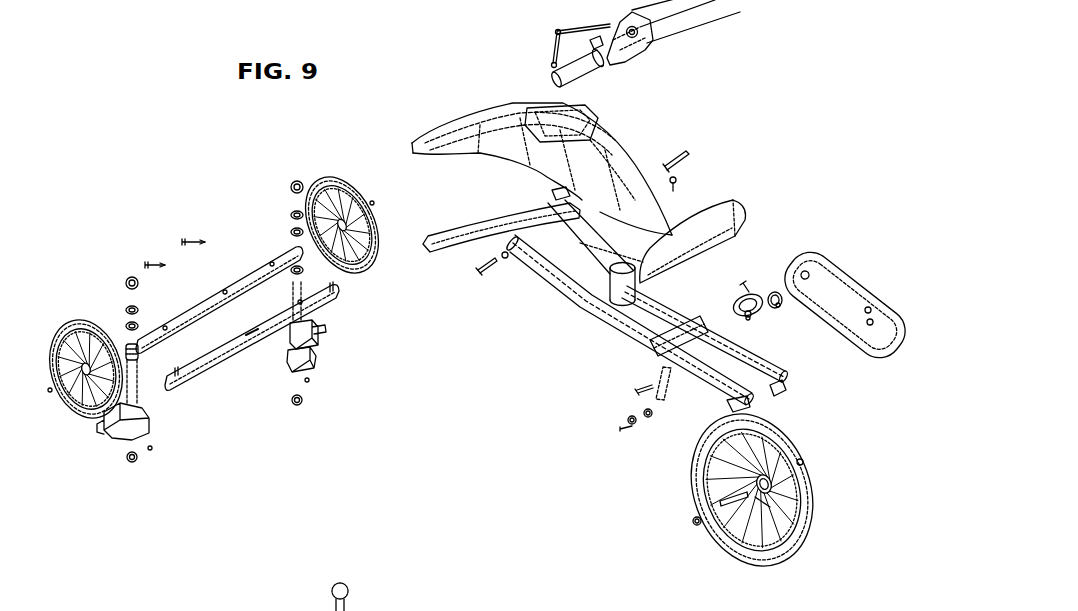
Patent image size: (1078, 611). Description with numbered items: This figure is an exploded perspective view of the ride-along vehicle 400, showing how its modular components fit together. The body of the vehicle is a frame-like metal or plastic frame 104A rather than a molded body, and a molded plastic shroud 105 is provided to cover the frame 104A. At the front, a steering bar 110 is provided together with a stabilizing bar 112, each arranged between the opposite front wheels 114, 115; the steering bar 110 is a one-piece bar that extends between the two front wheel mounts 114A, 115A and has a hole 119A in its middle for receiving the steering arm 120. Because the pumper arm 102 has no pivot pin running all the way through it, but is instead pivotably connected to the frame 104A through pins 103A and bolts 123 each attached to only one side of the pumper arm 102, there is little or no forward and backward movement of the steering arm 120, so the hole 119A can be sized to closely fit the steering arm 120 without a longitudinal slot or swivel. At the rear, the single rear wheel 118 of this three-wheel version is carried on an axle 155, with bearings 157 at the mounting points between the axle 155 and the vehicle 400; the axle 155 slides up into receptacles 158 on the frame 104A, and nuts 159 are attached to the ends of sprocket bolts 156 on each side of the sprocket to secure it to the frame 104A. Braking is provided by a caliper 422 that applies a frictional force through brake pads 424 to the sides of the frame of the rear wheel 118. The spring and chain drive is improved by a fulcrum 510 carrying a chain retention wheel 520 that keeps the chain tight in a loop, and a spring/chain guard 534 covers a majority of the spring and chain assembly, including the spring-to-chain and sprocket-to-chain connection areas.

The ride-along vehicle 400 is at (118, 115).
The pumper arm 102 is at (668, 28).
The pin 103A is at (553, 195).
The frame 104A is at (592, 298).
The molded plastic shroud 105 is at (473, 118).
The steering bar 110 is at (215, 362).
The stabilizing bar 112 is at (170, 318).
The front wheel 114 is at (82, 323).
The front wheel mount 114A is at (150, 441).
The front wheel 115 is at (323, 178).
The front wheel mount 115A is at (315, 347).
The rear wheel 118 is at (801, 476).
The hole 119A is at (252, 322).
The steering arm 120 is at (553, 31).
The bolt 123 is at (693, 152).
The axle 155 is at (773, 527).
The sprocket bolt 156 is at (732, 500).
The bearing 157 is at (762, 505).
The receptacle 158 is at (748, 411).
The nut 159 is at (697, 522).
The caliper 422 is at (753, 293).
The brake pad 424 is at (777, 305).
The fulcrum 510 is at (660, 395).
The chain retention wheel 520 is at (646, 437).
The spring/chain guard 534 is at (855, 288).